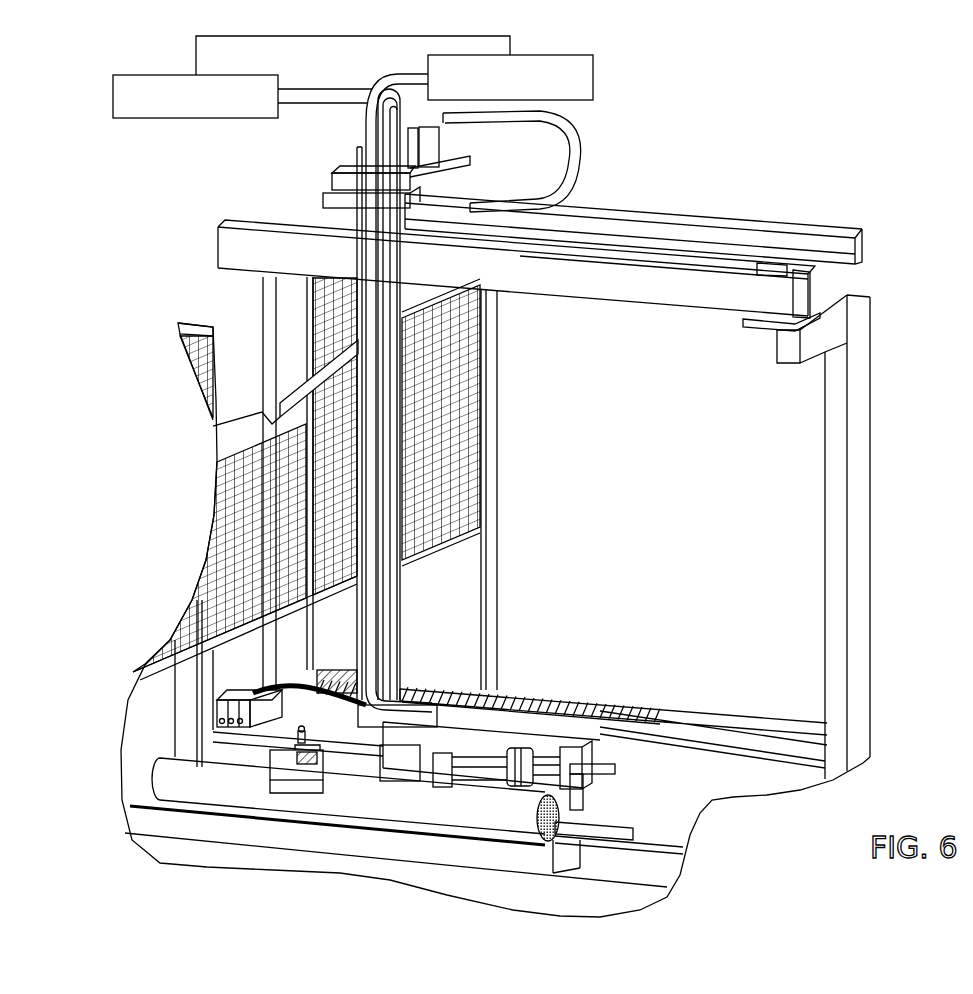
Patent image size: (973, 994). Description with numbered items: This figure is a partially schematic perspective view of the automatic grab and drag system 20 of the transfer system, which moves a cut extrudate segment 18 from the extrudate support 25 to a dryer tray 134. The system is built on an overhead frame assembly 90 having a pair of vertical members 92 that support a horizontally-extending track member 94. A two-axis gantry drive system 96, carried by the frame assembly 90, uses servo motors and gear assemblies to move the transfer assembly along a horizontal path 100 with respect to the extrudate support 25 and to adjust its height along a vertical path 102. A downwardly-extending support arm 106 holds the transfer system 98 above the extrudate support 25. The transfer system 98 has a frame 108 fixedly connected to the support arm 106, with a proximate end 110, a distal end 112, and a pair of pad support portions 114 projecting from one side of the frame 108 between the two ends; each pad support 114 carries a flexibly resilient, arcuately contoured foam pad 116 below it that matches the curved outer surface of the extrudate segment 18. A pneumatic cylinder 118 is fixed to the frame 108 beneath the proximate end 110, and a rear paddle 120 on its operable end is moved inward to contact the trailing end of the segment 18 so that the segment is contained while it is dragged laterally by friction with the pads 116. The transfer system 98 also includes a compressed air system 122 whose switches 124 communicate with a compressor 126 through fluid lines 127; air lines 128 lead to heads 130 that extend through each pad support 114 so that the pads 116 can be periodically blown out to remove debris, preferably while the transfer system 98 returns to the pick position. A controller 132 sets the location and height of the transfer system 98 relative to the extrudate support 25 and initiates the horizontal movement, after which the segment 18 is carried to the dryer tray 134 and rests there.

The extrudate segment 18 is at (385, 812).
The grab and drag system 20 is at (668, 168).
The extrudate support 25 is at (665, 873).
The overhead frame assembly 90 is at (885, 417).
The vertical members 92 is at (858, 595).
The track member 94 is at (713, 288).
The two-axis gantry drive system 96 is at (362, 75).
The transfer system 98 is at (575, 645).
The horizontal path 100 is at (783, 208).
The vertical path 102 is at (423, 634).
The support arm 106 is at (403, 663).
The frame 108 is at (590, 713).
The proximate end 110 is at (580, 753).
The distal end 112 is at (213, 743).
The pad support portions 114 is at (273, 757).
The extrudate segment contacting pad 116 is at (287, 773).
The pneumatic cylinder 118 is at (551, 758).
The rear paddle 120 is at (583, 807).
The compressed air system 122 is at (222, 595).
The switches 124 is at (217, 717).
The compressor 126 is at (594, 74).
The fluid lines 127 is at (367, 240).
The air lines 128 is at (346, 735).
The heads 130 is at (307, 773).
The controller 132 is at (113, 97).
The dryer tray 134 is at (442, 853).